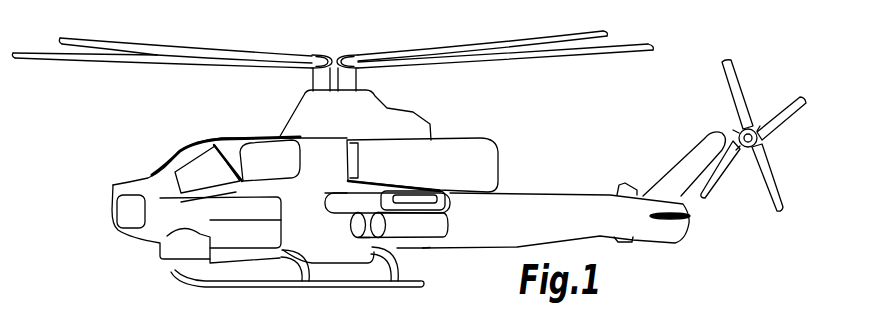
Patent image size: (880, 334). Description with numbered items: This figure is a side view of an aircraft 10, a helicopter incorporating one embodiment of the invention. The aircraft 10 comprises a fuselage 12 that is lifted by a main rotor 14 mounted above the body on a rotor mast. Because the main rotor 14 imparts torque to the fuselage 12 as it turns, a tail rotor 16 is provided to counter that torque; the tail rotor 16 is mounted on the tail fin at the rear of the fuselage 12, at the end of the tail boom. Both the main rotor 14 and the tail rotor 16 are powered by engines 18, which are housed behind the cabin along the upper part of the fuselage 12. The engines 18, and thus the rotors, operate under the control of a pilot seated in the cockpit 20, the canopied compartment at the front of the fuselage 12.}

The aircraft 10 is at (118, 158).
The fuselage 12 is at (423, 250).
The main rotor 14 is at (264, 54).
The tail rotor 16 is at (739, 80).
The engines 18 is at (459, 141).
The cockpit 20 is at (212, 142).